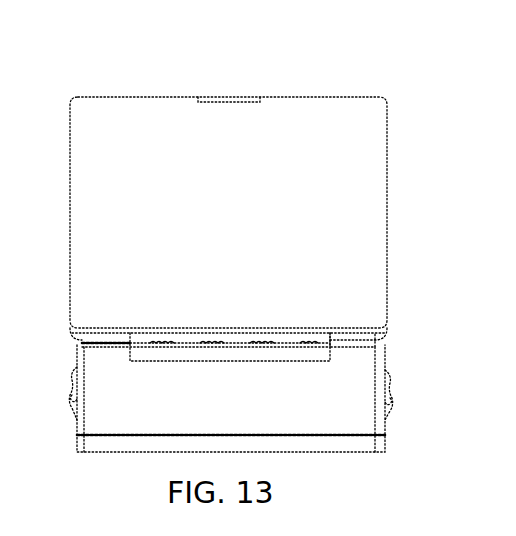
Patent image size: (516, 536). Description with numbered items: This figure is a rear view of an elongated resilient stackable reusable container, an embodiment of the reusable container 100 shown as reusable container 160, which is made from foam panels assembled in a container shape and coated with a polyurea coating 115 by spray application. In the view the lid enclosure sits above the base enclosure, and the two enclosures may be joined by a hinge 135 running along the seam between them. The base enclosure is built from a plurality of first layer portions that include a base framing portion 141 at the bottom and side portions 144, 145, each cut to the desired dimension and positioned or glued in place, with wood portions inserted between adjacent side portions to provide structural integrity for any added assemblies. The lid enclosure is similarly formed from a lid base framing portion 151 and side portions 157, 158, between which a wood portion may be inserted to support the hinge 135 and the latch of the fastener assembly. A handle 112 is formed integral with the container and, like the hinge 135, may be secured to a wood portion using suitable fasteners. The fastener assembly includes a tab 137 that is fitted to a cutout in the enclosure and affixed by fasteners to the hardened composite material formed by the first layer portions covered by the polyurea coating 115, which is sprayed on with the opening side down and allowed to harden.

The reusable container 100 is at (132, 492).
The handle 112 is at (383, 415).
The polyurea coating 115 is at (293, 250).
The hinge 135 is at (176, 342).
The tab 137 is at (225, 95).
The base framing portion 141 is at (102, 447).
The side portion 144 is at (133, 397).
The side portion 145 is at (80, 422).
The lid base framing portion 151 is at (298, 328).
The side portion 157 is at (340, 340).
The side portion 158 is at (120, 341).
The reusable container 160 is at (294, 44).